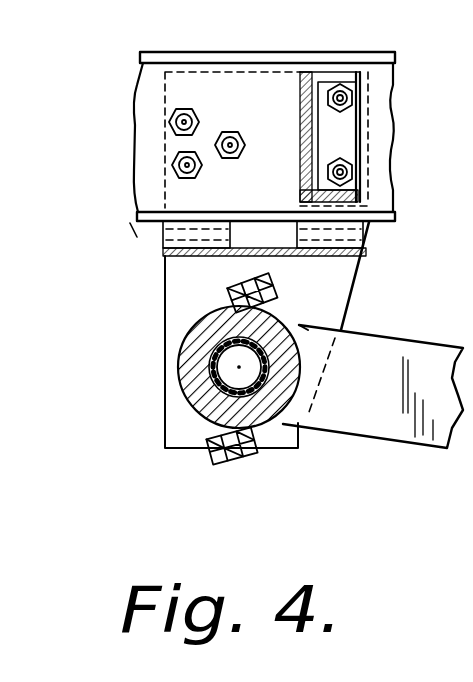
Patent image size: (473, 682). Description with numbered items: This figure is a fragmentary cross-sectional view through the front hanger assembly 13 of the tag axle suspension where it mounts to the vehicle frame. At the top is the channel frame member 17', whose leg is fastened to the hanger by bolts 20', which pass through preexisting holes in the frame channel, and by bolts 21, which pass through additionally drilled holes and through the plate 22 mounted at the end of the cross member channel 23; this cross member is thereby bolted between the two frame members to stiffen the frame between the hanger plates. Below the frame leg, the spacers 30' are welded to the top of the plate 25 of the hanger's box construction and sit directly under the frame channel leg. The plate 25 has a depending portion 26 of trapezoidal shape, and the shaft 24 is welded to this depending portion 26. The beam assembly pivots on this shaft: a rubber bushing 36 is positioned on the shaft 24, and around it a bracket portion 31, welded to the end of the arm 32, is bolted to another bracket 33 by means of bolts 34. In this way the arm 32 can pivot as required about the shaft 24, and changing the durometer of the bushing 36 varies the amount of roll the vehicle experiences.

The channel frame member 17' is at (262, 121).
The cross member channel 23 is at (330, 70).
The plate 22 is at (347, 130).
The bolts 21 is at (352, 95).
The bolts 20' is at (224, 127).
The plate 25 is at (322, 255).
The spacers 30' is at (260, 244).
The front hanger assembly 13 is at (352, 289).
The depending portion 26 is at (342, 315).
The arm 32 is at (401, 442).
The bracket portion 31 is at (302, 357).
The bracket 33 is at (193, 328).
The rubber bushing 36 is at (187, 356).
The shaft 24 is at (187, 400).
The bolts 34 is at (230, 288).